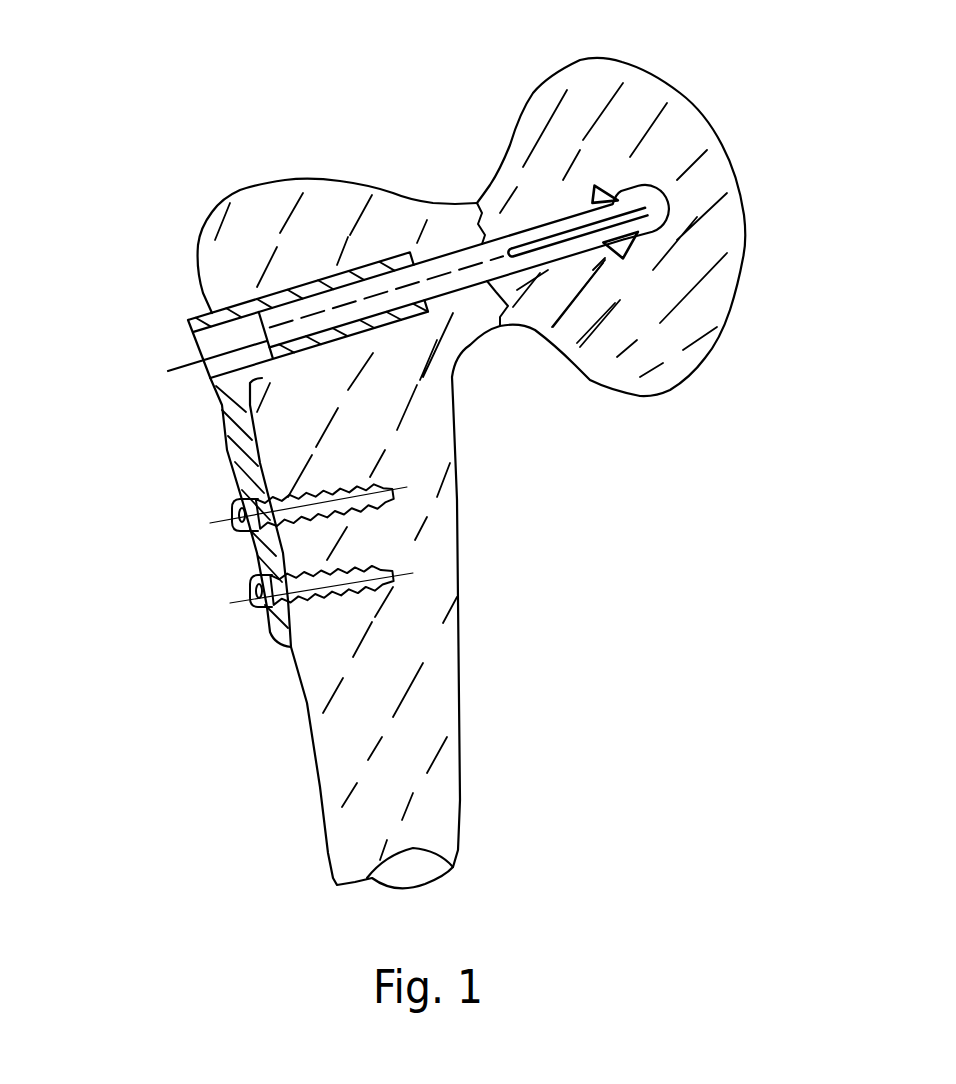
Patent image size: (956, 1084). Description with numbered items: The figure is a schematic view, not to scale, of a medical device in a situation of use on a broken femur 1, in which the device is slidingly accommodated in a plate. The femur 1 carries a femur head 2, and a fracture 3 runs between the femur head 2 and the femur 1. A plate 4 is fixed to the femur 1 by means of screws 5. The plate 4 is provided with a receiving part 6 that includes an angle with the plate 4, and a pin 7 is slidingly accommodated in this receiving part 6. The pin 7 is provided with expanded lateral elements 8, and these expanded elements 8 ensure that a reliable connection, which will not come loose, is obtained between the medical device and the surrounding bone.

The femur 1 is at (437, 652).
The femur head 2 is at (667, 352).
The fracture 3 is at (481, 190).
The plate 4 is at (236, 457).
The screws 5 is at (255, 581).
The receiving part 6 is at (202, 330).
The pin 7 is at (433, 272).
The expanded lateral elements 8 is at (640, 244).